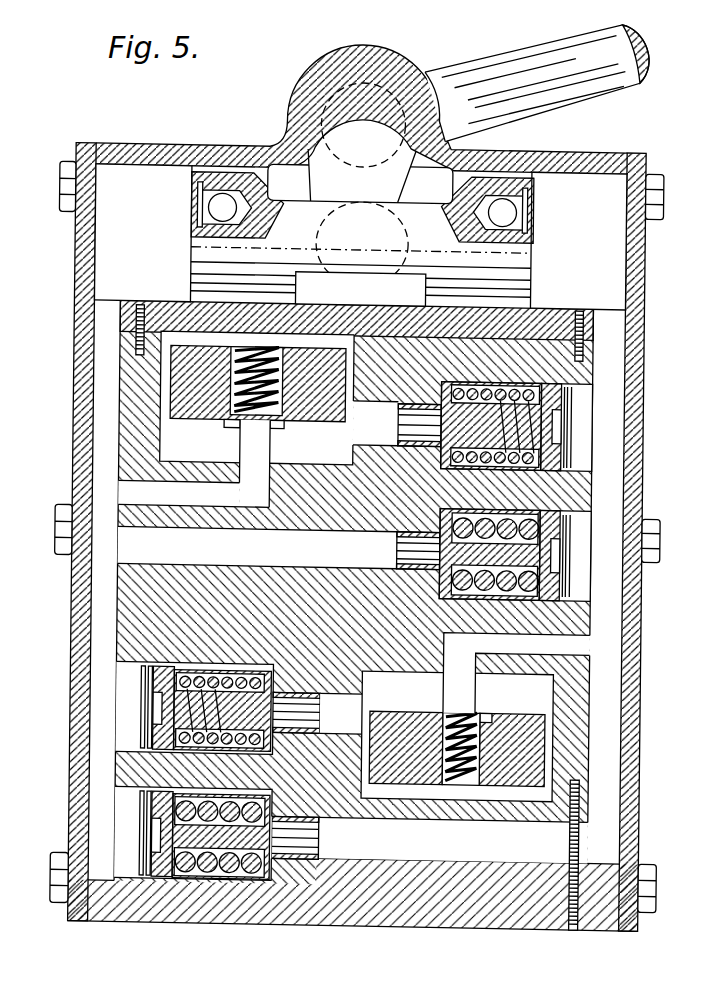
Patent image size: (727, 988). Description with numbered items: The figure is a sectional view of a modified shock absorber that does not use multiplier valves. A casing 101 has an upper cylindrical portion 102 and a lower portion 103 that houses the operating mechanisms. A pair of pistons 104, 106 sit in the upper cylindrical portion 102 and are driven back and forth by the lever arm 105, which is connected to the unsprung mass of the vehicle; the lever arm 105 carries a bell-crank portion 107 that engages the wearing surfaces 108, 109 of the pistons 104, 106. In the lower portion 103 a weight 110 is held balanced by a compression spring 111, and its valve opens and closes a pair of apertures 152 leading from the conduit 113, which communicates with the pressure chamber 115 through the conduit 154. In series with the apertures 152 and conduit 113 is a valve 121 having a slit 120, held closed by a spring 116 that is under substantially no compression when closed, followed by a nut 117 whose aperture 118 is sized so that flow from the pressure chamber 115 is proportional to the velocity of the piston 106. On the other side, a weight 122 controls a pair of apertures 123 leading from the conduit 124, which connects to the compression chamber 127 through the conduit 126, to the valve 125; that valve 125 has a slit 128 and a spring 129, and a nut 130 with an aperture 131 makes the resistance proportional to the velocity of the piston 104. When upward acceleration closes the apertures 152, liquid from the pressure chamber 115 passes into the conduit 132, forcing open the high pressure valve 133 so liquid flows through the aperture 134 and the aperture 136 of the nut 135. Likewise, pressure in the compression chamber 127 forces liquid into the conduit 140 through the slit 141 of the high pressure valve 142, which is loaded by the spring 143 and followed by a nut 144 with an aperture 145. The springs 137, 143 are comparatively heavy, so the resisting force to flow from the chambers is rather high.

The casing 101 is at (126, 147).
The upper cylindrical portion 102 is at (551, 316).
The lower portion 103 is at (320, 927).
The piston 104 is at (523, 254).
The lever arm 105 is at (565, 110).
The piston 106 is at (190, 251).
The bell-crank portion 107 is at (392, 200).
The wearing surface 108 is at (362, 251).
The wearing surface 109 is at (360, 289).
The weight 110 is at (226, 426).
The compression spring 111 is at (230, 362).
The conduit 113 is at (210, 502).
The pressure chamber 115 is at (157, 269).
The spring 116 is at (524, 447).
The nut 117 is at (546, 396).
The aperture 118 is at (562, 422).
The slit 120 is at (397, 424).
The valve 121 is at (540, 426).
The weight 122 is at (410, 712).
The apertures 123 is at (438, 694).
The conduit 124 is at (496, 649).
The valve 125 is at (162, 722).
The conduit 126 is at (607, 613).
The compression chamber 127 is at (583, 243).
The slit 128 is at (317, 713).
The spring 129 is at (146, 668).
The nut 130 is at (150, 684).
The aperture 131 is at (166, 712).
The conduit 132 is at (262, 559).
The high pressure valve 133 is at (548, 542).
The aperture 134 is at (398, 551).
The nut 135 is at (566, 515).
The aperture 136 is at (548, 556).
The spring 137 is at (556, 575).
The conduit 140 is at (486, 848).
The aperture or slit 141 is at (312, 840).
The high pressure valve 142 is at (242, 877).
The spring 143 is at (208, 878).
The nut 144 is at (150, 808).
The aperture 145 is at (170, 830).
The apertures 152 is at (239, 444).
The conduit 154 is at (107, 392).